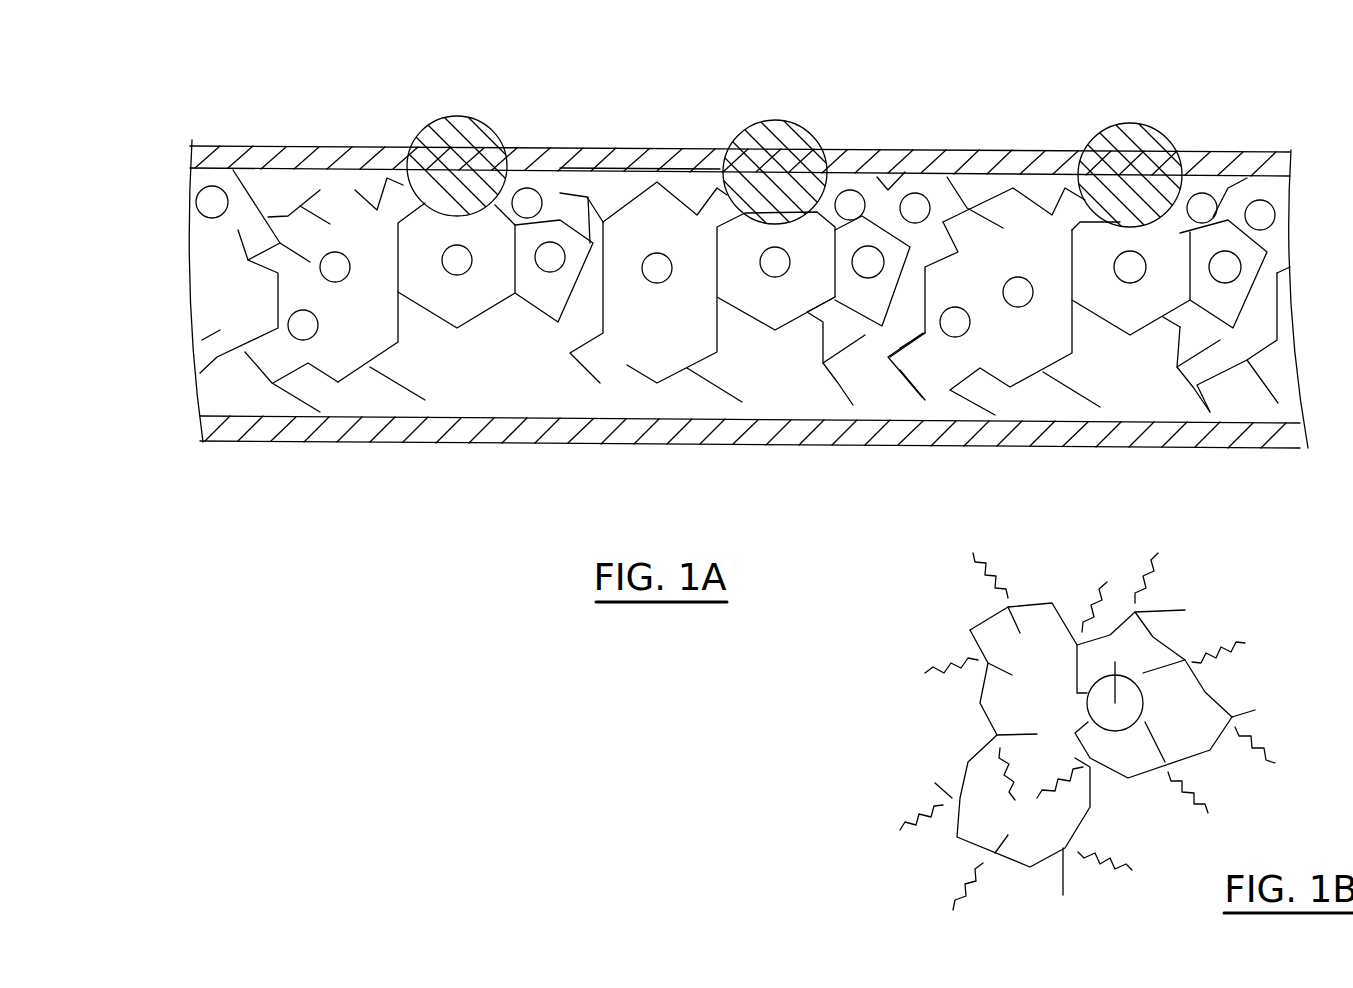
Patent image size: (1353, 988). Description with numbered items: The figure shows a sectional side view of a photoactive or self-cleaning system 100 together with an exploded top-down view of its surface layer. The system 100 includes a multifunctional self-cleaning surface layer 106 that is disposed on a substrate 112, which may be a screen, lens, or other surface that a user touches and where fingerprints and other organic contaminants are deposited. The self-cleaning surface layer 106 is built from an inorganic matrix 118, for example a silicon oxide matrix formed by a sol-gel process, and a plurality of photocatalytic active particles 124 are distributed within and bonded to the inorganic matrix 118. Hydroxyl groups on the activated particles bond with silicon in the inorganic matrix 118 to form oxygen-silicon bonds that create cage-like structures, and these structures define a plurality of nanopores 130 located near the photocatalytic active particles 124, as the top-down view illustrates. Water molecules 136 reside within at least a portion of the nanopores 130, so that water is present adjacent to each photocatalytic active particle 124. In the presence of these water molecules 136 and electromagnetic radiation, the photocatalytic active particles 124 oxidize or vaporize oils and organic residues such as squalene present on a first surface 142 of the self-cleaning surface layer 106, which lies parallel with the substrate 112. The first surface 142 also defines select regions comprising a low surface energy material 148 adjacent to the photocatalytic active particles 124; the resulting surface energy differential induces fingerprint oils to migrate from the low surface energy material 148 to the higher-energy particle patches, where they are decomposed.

In FIG. 1A, the photoactive system 100 is at (312, 72).
In FIG. 1A, the multifunctional self-cleaning surface layer 106 is at (173, 332).
In FIG. 1A, the substrate 112 is at (657, 443).
In FIG. 1A, the inorganic matrix 118 is at (222, 277).
In FIG. 1B, the inorganic matrix 118 is at (1212, 765).
In FIG. 1A, the photocatalytic active particles 124 is at (793, 122).
In FIG. 1B, the photocatalytic active particles 124 is at (1087, 708).
In FIG. 1A, the nanopores 130 is at (618, 345).
In FIG. 1B, the nanopores 130 is at (990, 812).
In FIG. 1A, the water molecules 136 is at (1018, 277).
In FIG. 1A, the first surface 142 is at (355, 157).
In FIG. 1A, the low surface energy material 148 is at (592, 148).